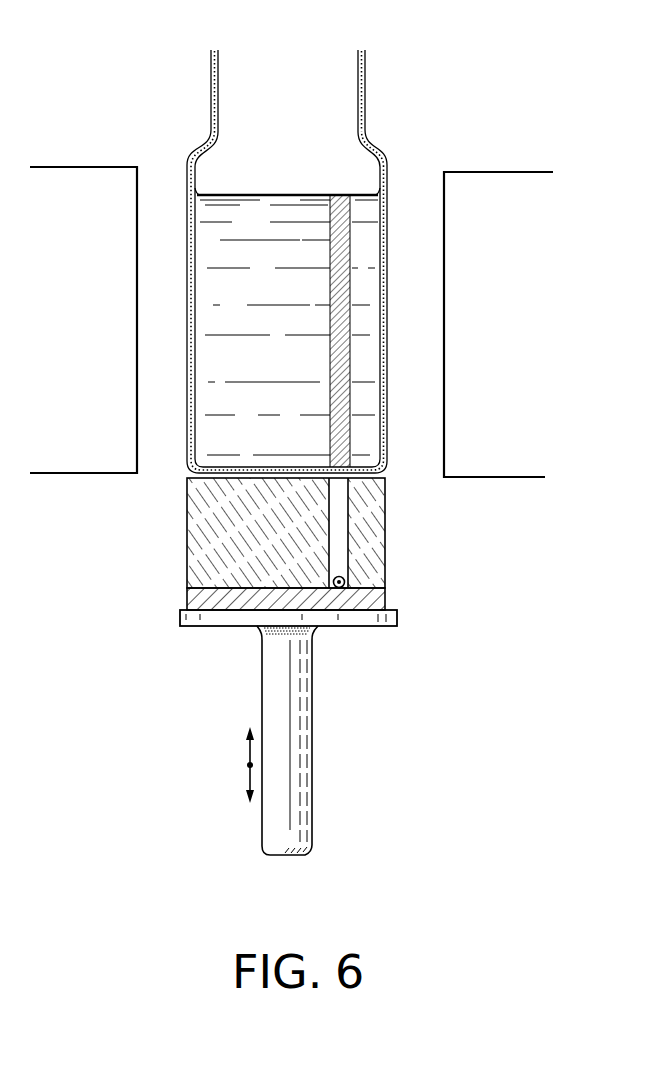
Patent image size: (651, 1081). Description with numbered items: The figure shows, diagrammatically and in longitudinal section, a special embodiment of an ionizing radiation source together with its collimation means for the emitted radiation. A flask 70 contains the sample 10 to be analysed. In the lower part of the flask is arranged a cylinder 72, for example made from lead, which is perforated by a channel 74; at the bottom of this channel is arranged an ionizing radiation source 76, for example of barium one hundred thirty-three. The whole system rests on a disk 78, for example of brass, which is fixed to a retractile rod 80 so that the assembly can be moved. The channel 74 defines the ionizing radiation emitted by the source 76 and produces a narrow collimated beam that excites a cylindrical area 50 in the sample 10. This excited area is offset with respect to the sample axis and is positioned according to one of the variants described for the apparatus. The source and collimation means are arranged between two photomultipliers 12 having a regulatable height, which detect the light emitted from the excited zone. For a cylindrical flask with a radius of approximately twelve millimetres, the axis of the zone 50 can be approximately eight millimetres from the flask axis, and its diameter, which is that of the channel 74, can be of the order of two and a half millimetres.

The sample 10 is at (252, 215).
The photomultipliers 12 is at (68, 369).
The cylindrical area 50 is at (343, 197).
The flask 70 is at (215, 70).
The cylinder 72 is at (225, 530).
The channel 74 is at (337, 515).
The ionizing radiation source 76 is at (345, 572).
The disk 78 is at (202, 598).
The retractile rod 80 is at (285, 818).